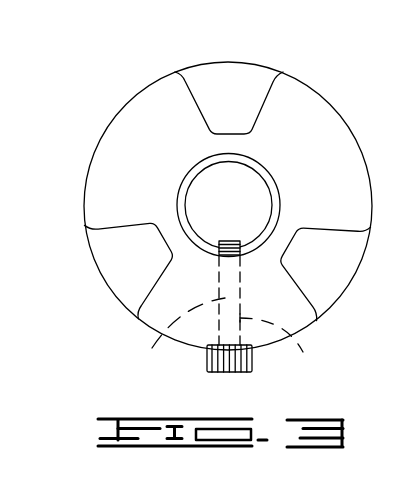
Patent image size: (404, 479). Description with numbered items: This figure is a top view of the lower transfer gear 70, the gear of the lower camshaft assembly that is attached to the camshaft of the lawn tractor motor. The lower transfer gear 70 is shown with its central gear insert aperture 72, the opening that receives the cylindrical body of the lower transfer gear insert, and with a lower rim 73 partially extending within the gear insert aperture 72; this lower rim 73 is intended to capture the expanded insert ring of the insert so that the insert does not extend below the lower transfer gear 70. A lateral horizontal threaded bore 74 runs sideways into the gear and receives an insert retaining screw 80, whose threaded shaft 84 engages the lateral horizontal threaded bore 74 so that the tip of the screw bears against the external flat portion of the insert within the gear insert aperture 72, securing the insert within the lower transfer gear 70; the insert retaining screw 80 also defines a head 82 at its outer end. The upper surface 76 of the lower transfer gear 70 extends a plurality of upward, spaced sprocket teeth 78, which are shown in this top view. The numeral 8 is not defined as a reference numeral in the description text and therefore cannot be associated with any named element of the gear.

The tag element 8 is at (233, 239).
The lower transfer gear 70 is at (211, 182).
The gear insert aperture 72 is at (252, 193).
The lower rim 73 is at (255, 157).
The lateral horizontal threaded bore 74 is at (314, 353).
The upper surface 76 is at (107, 185).
The sprocket teeth 78 is at (223, 88).
The insert retaining screw 80 is at (143, 352).
The head 82 is at (213, 360).
The threaded shaft 84 is at (220, 243).